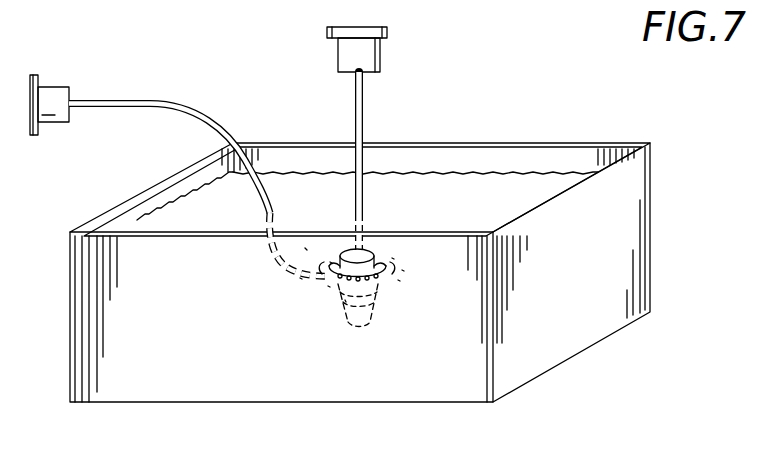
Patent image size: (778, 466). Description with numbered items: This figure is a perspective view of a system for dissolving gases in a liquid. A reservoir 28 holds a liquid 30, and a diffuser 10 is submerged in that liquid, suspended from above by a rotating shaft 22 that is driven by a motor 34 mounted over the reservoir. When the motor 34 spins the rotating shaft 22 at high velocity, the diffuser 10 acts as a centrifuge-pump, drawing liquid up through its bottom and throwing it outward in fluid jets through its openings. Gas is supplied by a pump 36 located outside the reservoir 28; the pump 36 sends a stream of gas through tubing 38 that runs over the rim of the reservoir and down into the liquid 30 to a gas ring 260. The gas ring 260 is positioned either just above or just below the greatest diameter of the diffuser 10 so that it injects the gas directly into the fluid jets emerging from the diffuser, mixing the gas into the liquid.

The diffuser 10 is at (383, 248).
The rotating shaft 22 is at (365, 112).
The reservoir 28 is at (587, 143).
The liquid 30 is at (514, 194).
The motor 34 is at (381, 53).
The pump 36 is at (53, 86).
The tubing 38 is at (142, 100).
The gas ring 260 is at (387, 283).